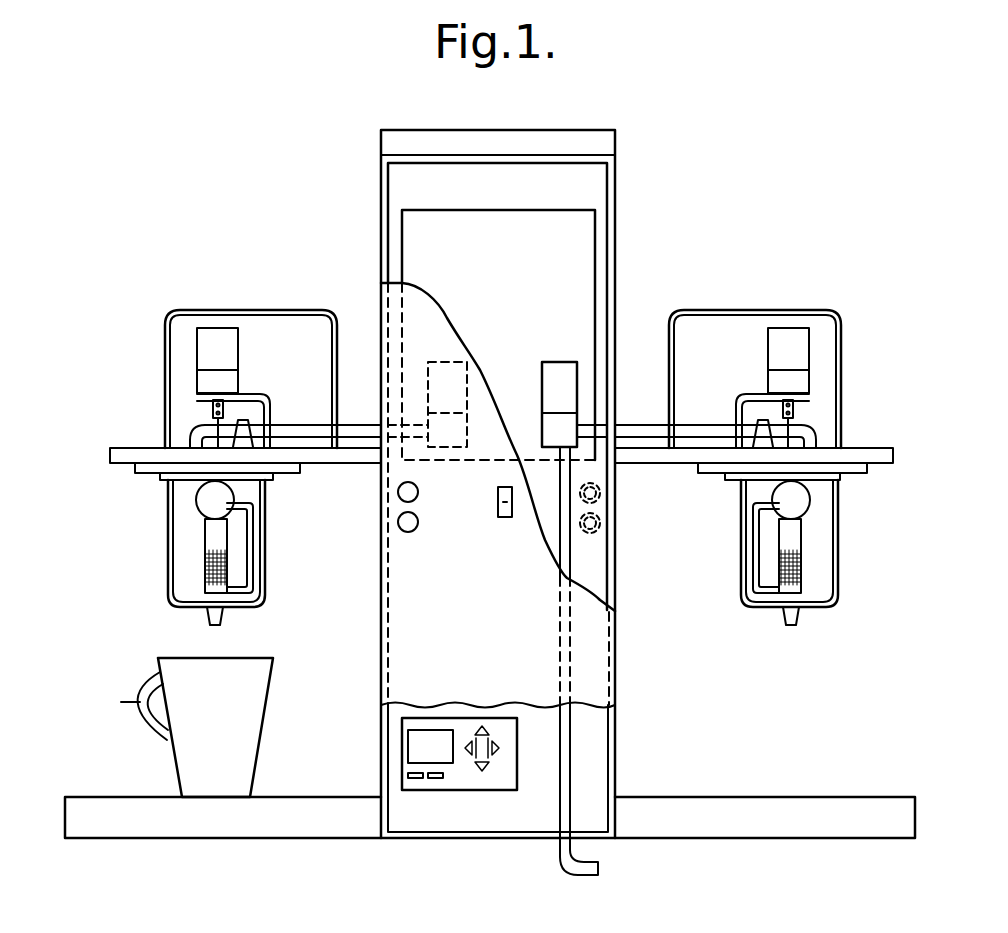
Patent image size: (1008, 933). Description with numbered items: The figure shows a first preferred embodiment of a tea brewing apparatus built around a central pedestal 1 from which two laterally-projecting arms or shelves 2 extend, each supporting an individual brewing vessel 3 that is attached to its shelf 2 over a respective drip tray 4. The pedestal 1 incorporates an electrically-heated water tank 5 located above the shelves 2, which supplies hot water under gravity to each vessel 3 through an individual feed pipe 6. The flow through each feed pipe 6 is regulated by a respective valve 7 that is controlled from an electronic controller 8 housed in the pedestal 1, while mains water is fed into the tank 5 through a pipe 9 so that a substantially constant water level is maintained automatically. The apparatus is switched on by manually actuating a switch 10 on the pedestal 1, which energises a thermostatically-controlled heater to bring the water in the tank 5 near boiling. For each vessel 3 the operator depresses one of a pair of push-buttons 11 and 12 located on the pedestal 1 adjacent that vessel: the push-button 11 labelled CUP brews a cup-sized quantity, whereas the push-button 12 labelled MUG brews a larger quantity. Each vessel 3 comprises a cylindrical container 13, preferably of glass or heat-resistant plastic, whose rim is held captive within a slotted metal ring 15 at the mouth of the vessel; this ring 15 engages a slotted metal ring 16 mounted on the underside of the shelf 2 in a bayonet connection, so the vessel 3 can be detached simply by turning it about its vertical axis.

The central pedestal 1 is at (623, 672).
The shelf 2 is at (332, 462).
The brewing vessel 3 is at (267, 577).
The drip tray 4 is at (308, 810).
The electrically-heated water tank 5 is at (597, 270).
The feed pipe 6 is at (355, 427).
The valve 7 is at (562, 367).
The electronic controller 8 is at (452, 783).
The pipe 9 is at (558, 875).
The switch 10 is at (505, 517).
The push-button 11 is at (410, 532).
The push-button 12 is at (392, 494).
The cylindrical container 13 is at (168, 593).
The slotted metal ring 15 is at (282, 480).
The slotted metal ring 16 is at (147, 475).